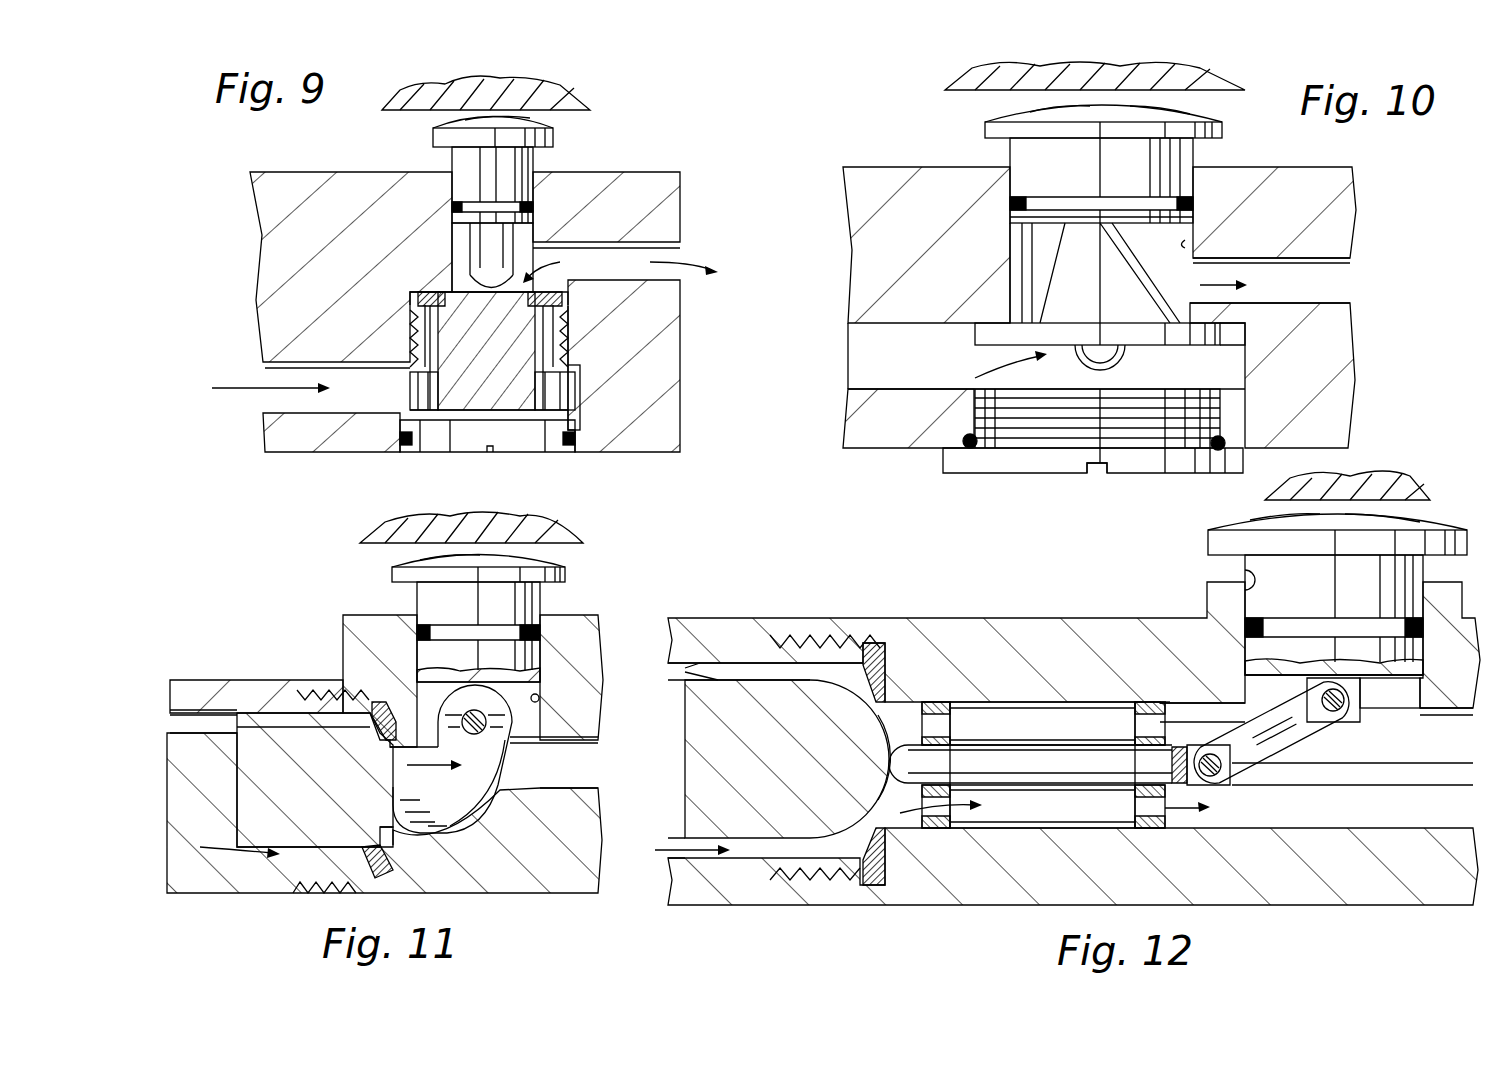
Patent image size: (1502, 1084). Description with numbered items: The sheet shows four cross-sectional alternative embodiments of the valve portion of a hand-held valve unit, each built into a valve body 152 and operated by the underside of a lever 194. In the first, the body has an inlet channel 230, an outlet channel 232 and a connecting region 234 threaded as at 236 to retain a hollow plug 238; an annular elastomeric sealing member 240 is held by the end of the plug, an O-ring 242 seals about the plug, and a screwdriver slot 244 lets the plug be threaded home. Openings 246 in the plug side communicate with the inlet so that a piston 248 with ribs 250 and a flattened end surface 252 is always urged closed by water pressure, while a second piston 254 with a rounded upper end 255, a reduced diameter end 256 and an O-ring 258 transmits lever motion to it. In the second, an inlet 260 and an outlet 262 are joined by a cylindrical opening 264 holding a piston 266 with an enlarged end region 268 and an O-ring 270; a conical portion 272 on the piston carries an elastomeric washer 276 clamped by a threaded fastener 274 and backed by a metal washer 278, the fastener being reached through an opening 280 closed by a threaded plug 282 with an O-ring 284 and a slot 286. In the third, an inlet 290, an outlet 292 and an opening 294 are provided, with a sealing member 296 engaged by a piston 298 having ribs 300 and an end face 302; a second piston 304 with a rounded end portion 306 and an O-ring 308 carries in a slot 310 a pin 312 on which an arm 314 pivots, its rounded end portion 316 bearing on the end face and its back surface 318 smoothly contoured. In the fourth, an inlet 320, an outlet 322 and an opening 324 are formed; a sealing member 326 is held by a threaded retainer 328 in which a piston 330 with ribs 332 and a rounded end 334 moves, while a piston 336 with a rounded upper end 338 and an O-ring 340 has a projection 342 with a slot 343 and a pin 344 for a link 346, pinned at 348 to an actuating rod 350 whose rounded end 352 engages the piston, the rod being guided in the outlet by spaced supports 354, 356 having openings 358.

In FIG. 9, the valve body 152 is at (613, 185).
In FIG. 10, the valve body 152 is at (1337, 182).
In FIG. 11, the valve body 152 is at (570, 622).
In FIG. 12, the valve body 152 is at (1045, 632).
In FIG. 9, the lever 194 is at (540, 93).
In FIG. 10, the lever 194 is at (1185, 78).
In FIG. 11, the lever 194 is at (535, 530).
In FIG. 12, the lever 194 is at (1405, 480).
In FIG. 9, the inlet channel 230 is at (280, 370).
In FIG. 9, the outlet channel 232 is at (681, 245).
In FIG. 9, the connecting region 234 is at (563, 266).
In FIG. 9, the threads 236 is at (565, 333).
In FIG. 9, the hollow plug 238 is at (538, 448).
In FIG. 9, the sealing member 240 is at (455, 290).
In FIG. 9, the O-ring 242 is at (578, 442).
In FIG. 9, the screwdriver slot 244 is at (492, 452).
In FIG. 9, the openings 246 is at (418, 389).
In FIG. 9, the piston 248 is at (450, 323).
In FIG. 9, the ribs 250 is at (433, 348).
In FIG. 9, the flattened end surface 252 is at (453, 262).
In FIG. 9, the second piston 254 is at (522, 187).
In FIG. 9, the rounded upper end 255 is at (532, 121).
In FIG. 9, the reduced diameter end 256 is at (500, 247).
In FIG. 9, the O-ring 258 is at (453, 208).
In FIG. 10, the inlet 260 is at (860, 343).
In FIG. 10, the outlet 262 is at (1349, 273).
In FIG. 10, the cylindrical opening 264 is at (1186, 244).
In FIG. 10, the piston 266 is at (1108, 176).
In FIG. 10, the enlarged end region 268 is at (1177, 117).
In FIG. 10, the O-ring 270 is at (1196, 205).
In FIG. 10, the conical portion 272 is at (1117, 276).
In FIG. 10, the threaded fastener 274 is at (1104, 358).
In FIG. 10, the elastomeric washer 276 is at (975, 331).
In FIG. 10, the metal washer 278 is at (990, 347).
In FIG. 10, the opening 280 is at (1222, 420).
In FIG. 10, the threaded plug 282 is at (1033, 466).
In FIG. 10, the O-ring 284 is at (972, 452).
In FIG. 10, the slot 286 is at (1097, 476).
In FIG. 11, the inlet 290 is at (186, 742).
In FIG. 11, the outlet 292 is at (582, 768).
In FIG. 11, the opening 294 is at (540, 698).
In FIG. 11, the sealing member 296 is at (386, 853).
In FIG. 11, the piston 298 is at (248, 774).
In FIG. 11, the ribs 300 is at (287, 720).
In FIG. 11, the end face 302 is at (392, 772).
In FIG. 11, the second piston 304 is at (425, 598).
In FIG. 11, the rounded end portion 306 is at (400, 557).
In FIG. 11, the O-ring 308 is at (417, 633).
In FIG. 11, the slot 310 is at (420, 698).
In FIG. 11, the pin 312 is at (475, 734).
In FIG. 11, the arm 314 is at (475, 793).
In FIG. 11, the rounded end portion 316 is at (394, 806).
In FIG. 11, the back surface 318 is at (503, 767).
In FIG. 12, the inlet 320 is at (685, 670).
In FIG. 12, the outlet 322 is at (1455, 812).
In FIG. 12, the opening 324 is at (1243, 568).
In FIG. 12, the sealing member 326 is at (886, 658).
In FIG. 12, the threaded retainer 328 is at (717, 632).
In FIG. 12, the piston 330 is at (698, 718).
In FIG. 12, the ribs 332 is at (707, 670).
In FIG. 12, the rounded end 334 is at (883, 727).
In FIG. 12, the piston 336 is at (1328, 597).
In FIG. 12, the rounded upper end 338 is at (1413, 516).
In FIG. 12, the O-ring 340 is at (1247, 630).
In FIG. 12, the projection 342 is at (1362, 692).
In FIG. 12, the slot 343 is at (1365, 713).
In FIG. 12, the pin 344 is at (1334, 712).
In FIG. 12, the link 346 is at (1285, 757).
In FIG. 12, the pin 348 is at (1228, 785).
In FIG. 12, the actuating rod 350 is at (1033, 777).
In FIG. 12, the rounded end 352 is at (883, 783).
In FIG. 12, the support 354 is at (1158, 702).
In FIG. 12, the support 356 is at (938, 705).
In FIG. 12, the openings 358 is at (950, 723).